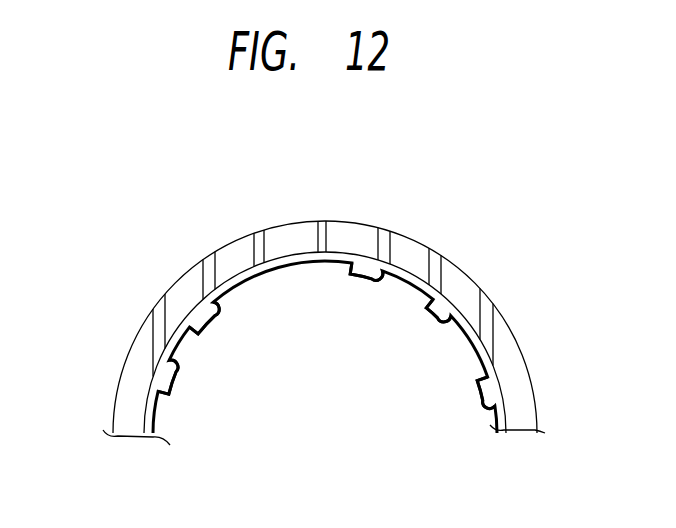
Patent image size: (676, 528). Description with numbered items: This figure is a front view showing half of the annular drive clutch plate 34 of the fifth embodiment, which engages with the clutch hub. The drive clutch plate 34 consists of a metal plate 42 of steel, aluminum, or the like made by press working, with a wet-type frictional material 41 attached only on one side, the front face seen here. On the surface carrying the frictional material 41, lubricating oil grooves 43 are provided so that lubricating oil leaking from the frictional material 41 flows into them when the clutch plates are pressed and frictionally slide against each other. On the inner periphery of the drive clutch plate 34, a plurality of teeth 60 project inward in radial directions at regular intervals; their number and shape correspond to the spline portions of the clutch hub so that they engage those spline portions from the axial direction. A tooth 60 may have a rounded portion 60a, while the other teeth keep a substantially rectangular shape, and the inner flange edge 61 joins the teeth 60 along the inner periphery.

The drive clutch plate 34 is at (483, 134).
The wet-type frictional material 41 is at (140, 353).
The metal plate 42 is at (344, 135).
The lubricating oil grooves 43 is at (213, 262).
The teeth 60 is at (212, 318).
The rounded portion 60a is at (220, 313).
The flange 61 is at (403, 280).